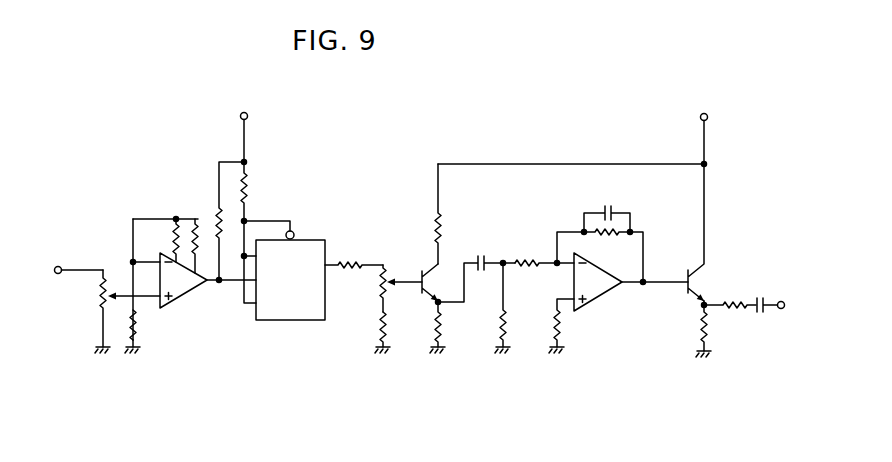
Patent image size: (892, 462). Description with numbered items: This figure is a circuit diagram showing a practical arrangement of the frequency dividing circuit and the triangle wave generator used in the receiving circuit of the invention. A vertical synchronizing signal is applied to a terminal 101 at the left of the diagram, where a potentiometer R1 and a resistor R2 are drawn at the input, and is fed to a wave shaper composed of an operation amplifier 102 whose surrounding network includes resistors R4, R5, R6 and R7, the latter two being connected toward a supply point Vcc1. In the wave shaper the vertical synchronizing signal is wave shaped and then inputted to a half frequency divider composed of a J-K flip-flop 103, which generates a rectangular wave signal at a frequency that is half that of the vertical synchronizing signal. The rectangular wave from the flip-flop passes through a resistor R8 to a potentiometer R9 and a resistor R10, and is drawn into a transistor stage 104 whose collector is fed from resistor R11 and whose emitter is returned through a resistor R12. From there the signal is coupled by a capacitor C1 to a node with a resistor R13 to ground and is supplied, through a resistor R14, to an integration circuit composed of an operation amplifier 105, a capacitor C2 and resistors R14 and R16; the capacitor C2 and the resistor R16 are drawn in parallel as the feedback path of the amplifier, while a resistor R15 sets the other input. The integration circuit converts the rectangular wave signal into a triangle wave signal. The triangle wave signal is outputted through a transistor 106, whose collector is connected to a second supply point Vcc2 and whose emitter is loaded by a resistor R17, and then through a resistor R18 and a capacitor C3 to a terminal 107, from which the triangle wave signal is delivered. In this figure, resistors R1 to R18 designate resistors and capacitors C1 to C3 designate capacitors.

The terminal 101 is at (59, 265).
The operation amplifier 102 is at (186, 292).
The J-K flip-flop 103 is at (299, 237).
The transistor 104 is at (418, 278).
The operation amplifier 105 is at (600, 300).
The transistor 106 is at (705, 269).
The terminal 107 is at (785, 309).
The resistor R1 is at (102, 298).
The resistor R2 is at (137, 337).
The resistor R4 is at (174, 236).
The resistor R5 is at (203, 228).
The resistor R6 is at (218, 204).
The resistor R7 is at (247, 184).
The resistor R8 is at (343, 262).
The resistor R9 is at (380, 284).
The resistor R10 is at (380, 321).
The resistor R11 is at (437, 230).
The resistor R12 is at (443, 333).
The resistor R13 is at (508, 329).
The resistor R14 is at (531, 261).
The resistor R15 is at (562, 329).
The resistor R16 is at (598, 236).
The resistor R17 is at (701, 326).
The resistor R18 is at (736, 311).
The capacitor C1 is at (487, 259).
The capacitor C2 is at (608, 211).
The capacitor C3 is at (758, 301).
The supply voltage terminal Vcc1 is at (262, 131).
The supply voltage terminal Vcc2 is at (705, 127).